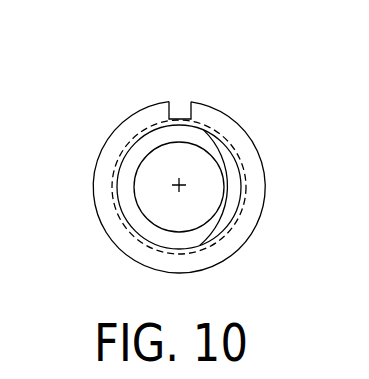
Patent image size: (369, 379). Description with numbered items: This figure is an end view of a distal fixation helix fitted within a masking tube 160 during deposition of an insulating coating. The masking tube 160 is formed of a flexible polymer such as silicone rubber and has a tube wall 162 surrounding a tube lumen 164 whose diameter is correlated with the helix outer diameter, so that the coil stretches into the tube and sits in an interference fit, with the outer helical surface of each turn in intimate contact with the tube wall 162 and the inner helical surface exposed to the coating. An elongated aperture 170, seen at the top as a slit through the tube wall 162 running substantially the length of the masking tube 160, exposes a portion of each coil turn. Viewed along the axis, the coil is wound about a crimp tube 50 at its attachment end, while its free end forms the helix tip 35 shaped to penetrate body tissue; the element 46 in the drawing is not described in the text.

The masking tube 160 is at (283, 213).
The tube wall 162 is at (107, 213).
The tube lumen 164 is at (236, 153).
The elongated aperture 170 is at (191, 88).
The tubular member 46 is at (132, 165).
The crimp tube 50 is at (192, 218).
The helix tip 35 is at (209, 248).